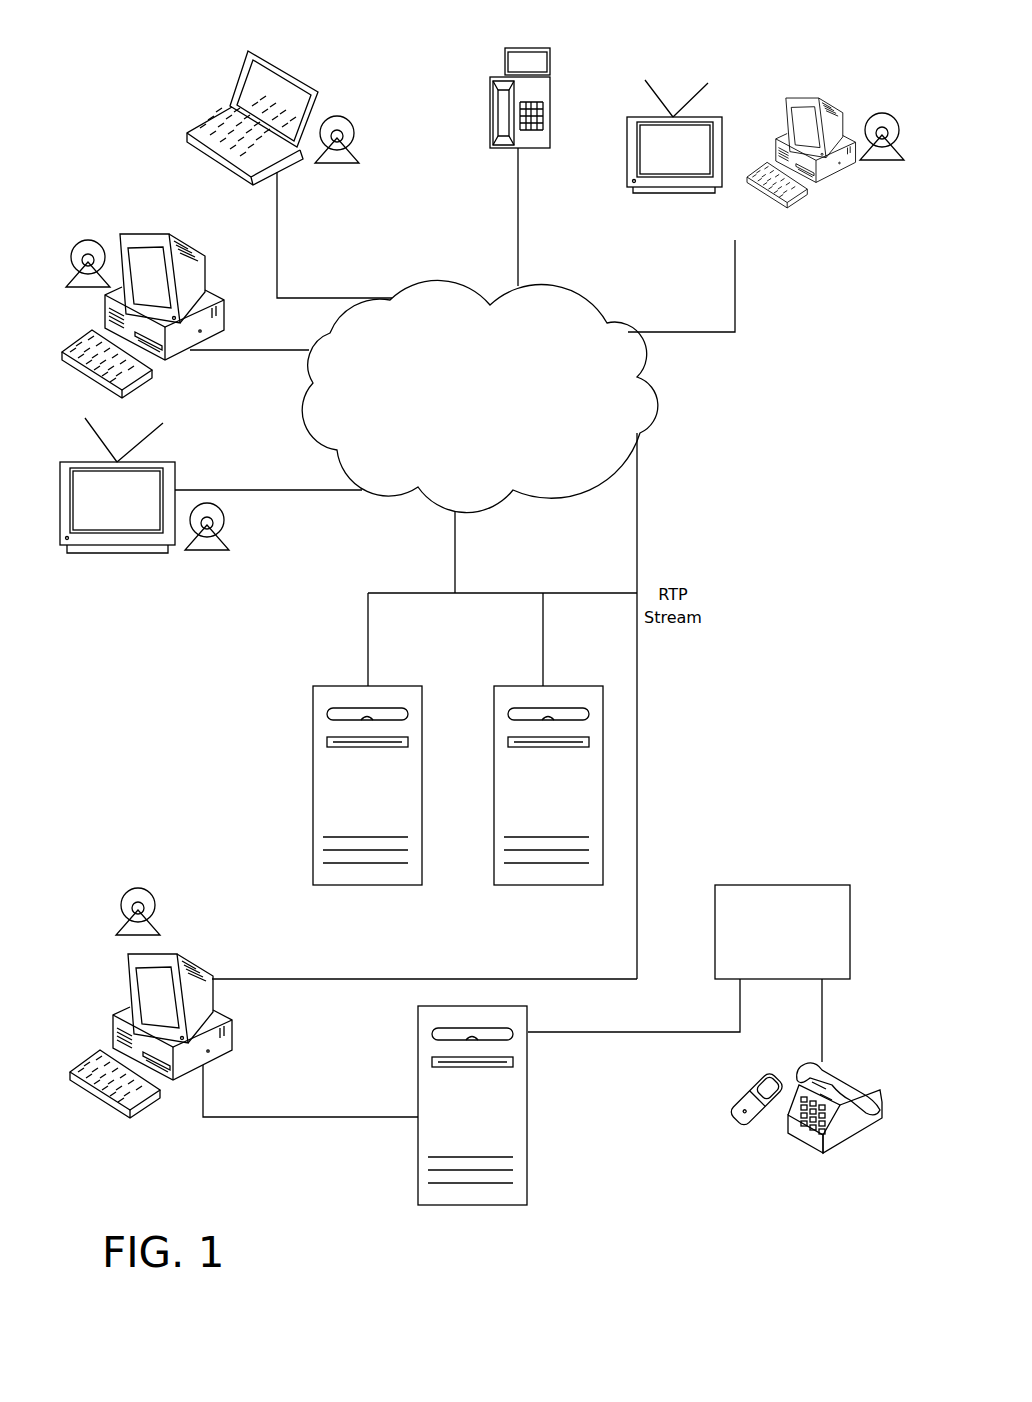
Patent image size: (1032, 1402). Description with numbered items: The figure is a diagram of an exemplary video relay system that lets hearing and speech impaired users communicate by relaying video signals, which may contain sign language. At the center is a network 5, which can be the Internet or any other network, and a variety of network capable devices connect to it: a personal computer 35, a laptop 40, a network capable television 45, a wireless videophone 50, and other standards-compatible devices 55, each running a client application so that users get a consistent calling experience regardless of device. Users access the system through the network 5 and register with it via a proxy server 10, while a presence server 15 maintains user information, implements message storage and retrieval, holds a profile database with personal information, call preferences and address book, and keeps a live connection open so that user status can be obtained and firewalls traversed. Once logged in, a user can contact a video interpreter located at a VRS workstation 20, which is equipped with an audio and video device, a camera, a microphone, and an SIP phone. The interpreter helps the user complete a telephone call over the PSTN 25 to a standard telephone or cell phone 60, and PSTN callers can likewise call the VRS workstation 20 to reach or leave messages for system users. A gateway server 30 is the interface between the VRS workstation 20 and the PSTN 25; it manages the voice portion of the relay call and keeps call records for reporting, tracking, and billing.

The network 5 is at (463, 425).
The proxy server 10 is at (313, 718).
The presence server 15 is at (494, 718).
The video relay system (VRS) workstation 20 is at (128, 970).
The public switched telephone network (PSTN) 25 is at (850, 912).
The gateway server 30 is at (418, 1042).
The personal computer 35 is at (205, 267).
The laptop 40 is at (315, 110).
The network capable television 45 is at (175, 477).
The wireless videophone 50 is at (570, 74).
The H.323 compatible devices 55 is at (747, 88).
The standard telephone/cell phone 60 is at (753, 1153).